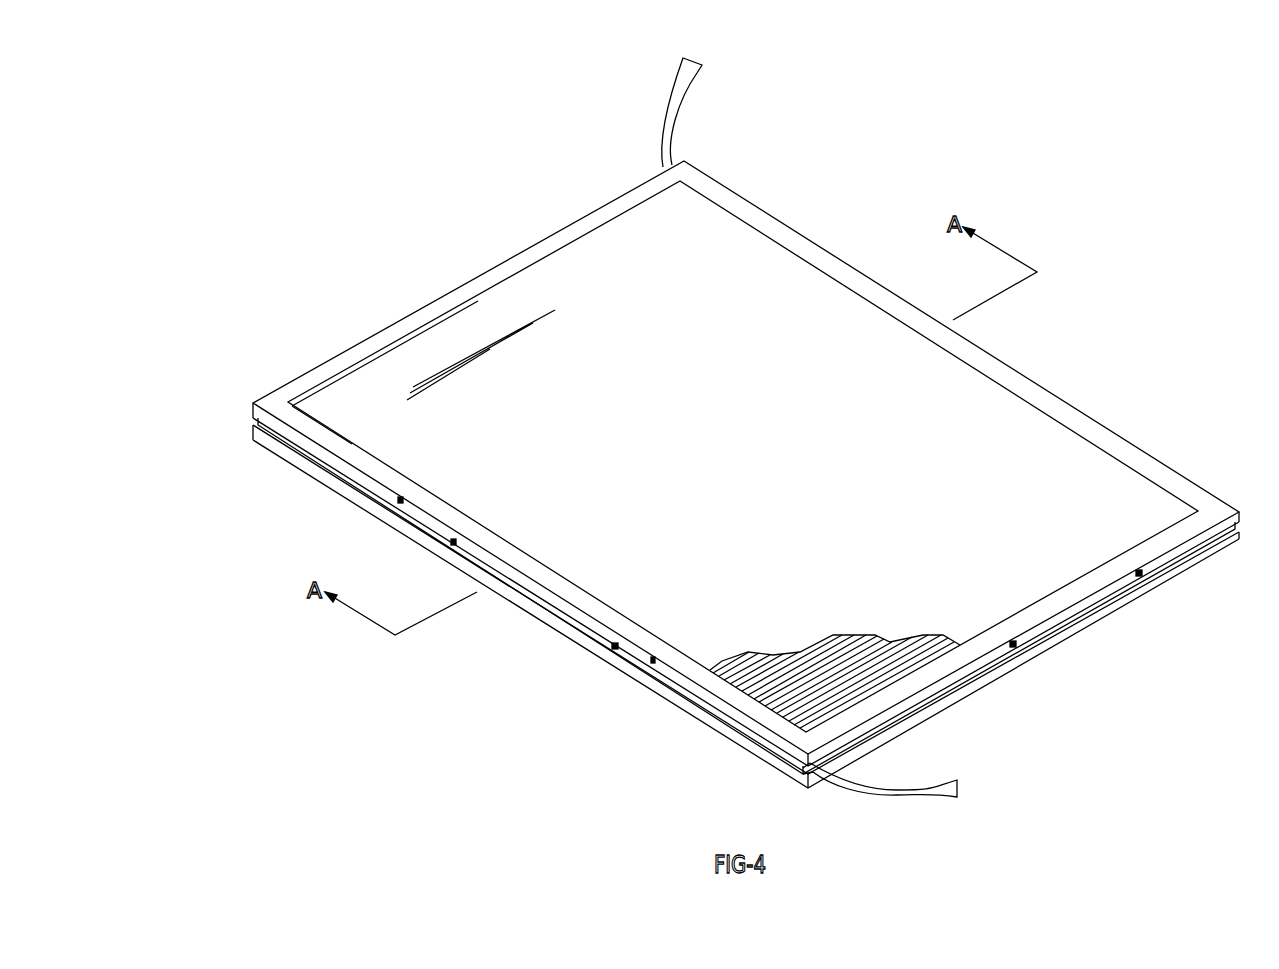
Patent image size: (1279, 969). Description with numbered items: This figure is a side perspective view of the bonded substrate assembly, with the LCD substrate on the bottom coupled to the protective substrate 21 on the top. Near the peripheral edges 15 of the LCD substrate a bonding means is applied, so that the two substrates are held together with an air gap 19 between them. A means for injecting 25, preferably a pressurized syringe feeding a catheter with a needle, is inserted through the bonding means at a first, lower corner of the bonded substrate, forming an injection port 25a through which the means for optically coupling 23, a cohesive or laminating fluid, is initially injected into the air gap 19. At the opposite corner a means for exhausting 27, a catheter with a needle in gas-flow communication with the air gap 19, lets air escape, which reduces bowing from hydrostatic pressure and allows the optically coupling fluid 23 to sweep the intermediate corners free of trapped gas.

The peripheral edges 15 is at (275, 448).
The air gap 19 is at (388, 502).
The protective substrate 21 is at (352, 470).
The means for optically coupling 23 is at (760, 692).
The means for injecting 25 is at (920, 800).
The injection port 25a is at (807, 783).
The means for exhausting 27 is at (700, 73).